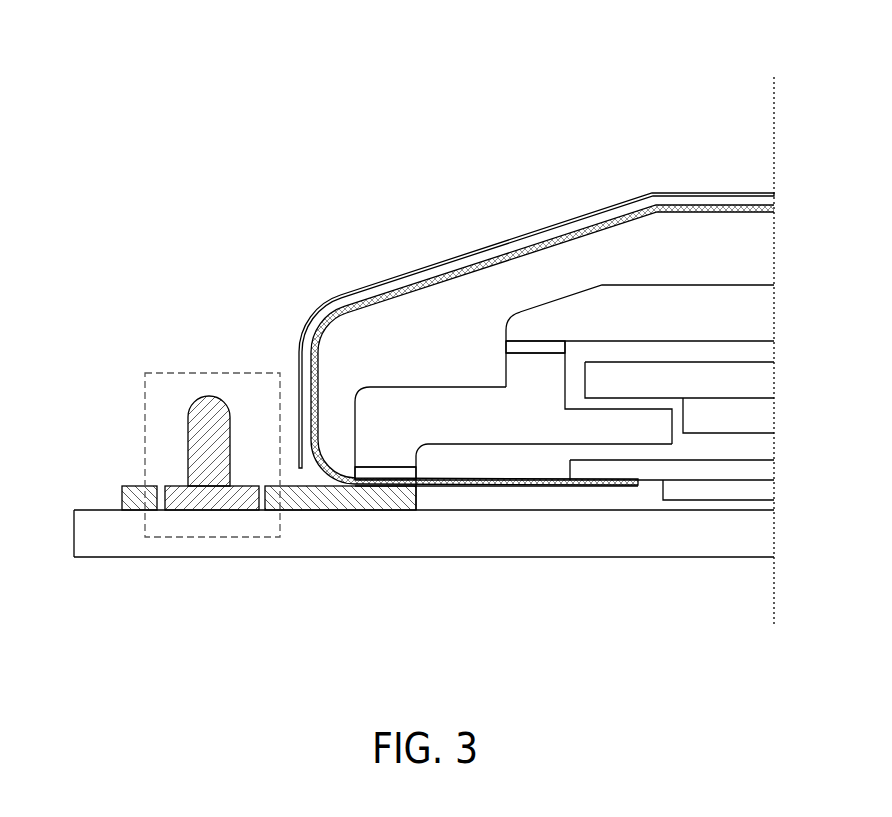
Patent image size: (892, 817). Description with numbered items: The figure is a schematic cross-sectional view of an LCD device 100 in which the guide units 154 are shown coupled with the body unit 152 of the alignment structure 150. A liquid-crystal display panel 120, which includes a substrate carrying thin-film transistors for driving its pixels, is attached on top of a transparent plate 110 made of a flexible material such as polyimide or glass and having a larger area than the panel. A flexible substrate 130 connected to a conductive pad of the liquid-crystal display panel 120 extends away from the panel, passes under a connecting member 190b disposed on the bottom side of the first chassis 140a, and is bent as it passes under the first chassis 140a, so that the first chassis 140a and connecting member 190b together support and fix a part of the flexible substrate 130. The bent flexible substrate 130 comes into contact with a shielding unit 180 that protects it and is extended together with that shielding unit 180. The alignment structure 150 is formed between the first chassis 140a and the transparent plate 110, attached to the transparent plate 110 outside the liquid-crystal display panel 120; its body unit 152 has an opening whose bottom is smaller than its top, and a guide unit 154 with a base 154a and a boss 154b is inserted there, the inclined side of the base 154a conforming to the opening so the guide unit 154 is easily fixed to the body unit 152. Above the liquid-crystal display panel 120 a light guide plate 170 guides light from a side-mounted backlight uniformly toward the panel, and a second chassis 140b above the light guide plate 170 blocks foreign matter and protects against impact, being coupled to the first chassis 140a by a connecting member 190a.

The LCD device 100 is at (757, 53).
The transparent plate 110 is at (93, 537).
The liquid-crystal display panel 120 is at (737, 482).
The flexible substrate 130 is at (370, 480).
The first chassis 140a is at (478, 427).
The second chassis 140b is at (745, 313).
The alignment structure 150 is at (384, 531).
The body unit 152 is at (122, 489).
The guide unit 154 is at (215, 516).
The base 154a is at (189, 497).
The boss 154b is at (215, 473).
The light guide plate 170 is at (745, 378).
The shielding unit 180 is at (745, 202).
The connecting member 190a is at (547, 347).
The connecting member 190b is at (403, 472).